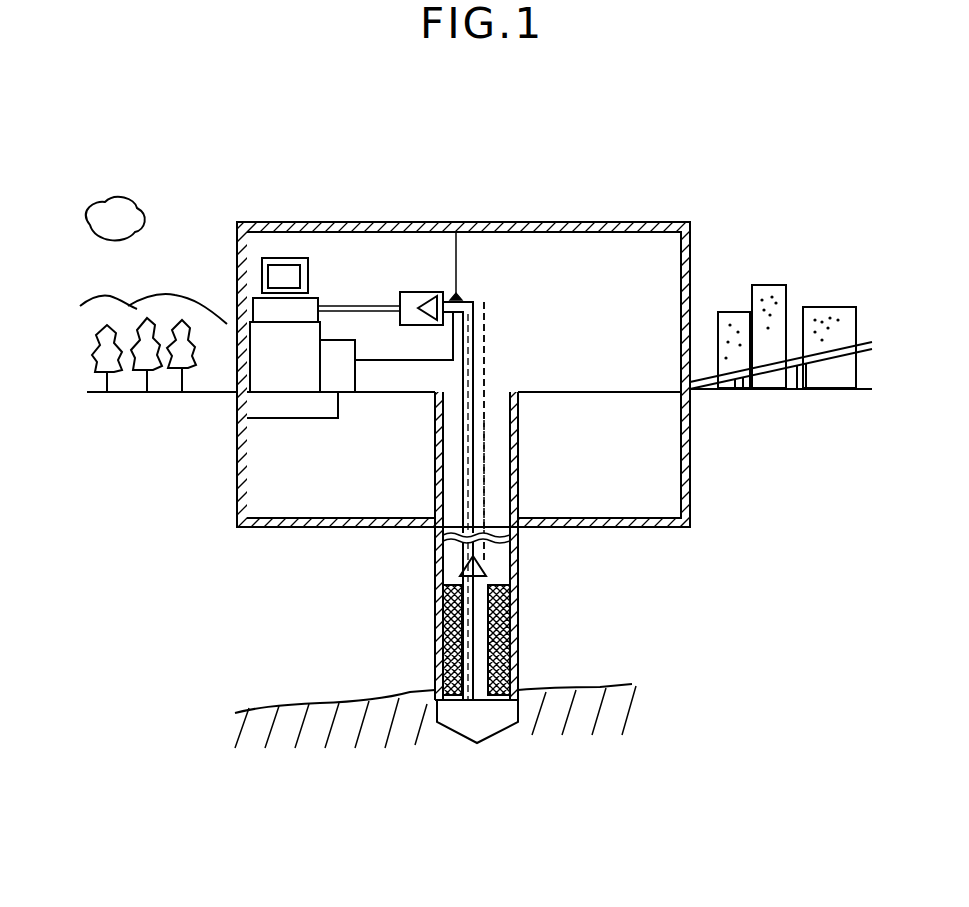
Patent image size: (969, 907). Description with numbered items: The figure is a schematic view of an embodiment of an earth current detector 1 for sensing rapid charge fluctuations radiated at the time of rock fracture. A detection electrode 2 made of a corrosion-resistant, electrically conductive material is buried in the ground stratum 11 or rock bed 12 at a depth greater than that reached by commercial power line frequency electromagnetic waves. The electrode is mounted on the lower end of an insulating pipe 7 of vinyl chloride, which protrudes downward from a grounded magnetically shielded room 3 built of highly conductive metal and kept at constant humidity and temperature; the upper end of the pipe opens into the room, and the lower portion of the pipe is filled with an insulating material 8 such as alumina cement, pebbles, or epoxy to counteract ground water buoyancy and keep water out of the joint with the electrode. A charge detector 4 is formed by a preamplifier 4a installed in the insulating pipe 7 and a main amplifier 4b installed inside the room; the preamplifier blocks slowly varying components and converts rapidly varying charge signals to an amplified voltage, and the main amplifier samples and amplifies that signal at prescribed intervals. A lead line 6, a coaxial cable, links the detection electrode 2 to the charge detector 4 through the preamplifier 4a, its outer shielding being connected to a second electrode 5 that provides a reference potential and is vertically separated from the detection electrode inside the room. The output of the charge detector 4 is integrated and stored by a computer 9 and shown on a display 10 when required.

The earth current detector 1 is at (513, 228).
The detection electrode 2 is at (487, 720).
The magnetically shielded room 3 is at (563, 222).
The charge detector 4 is at (555, 338).
The preamplifier 4a is at (482, 537).
The main amplifier 4b is at (456, 290).
The second electrode 5 is at (324, 308).
The lead line 6 is at (470, 452).
The insulating pipe 7 is at (508, 635).
The insulating material 8 is at (455, 606).
The computer 9 is at (278, 318).
The display 10 is at (282, 272).
The ground stratum 11 is at (158, 545).
The rock bed 12 is at (297, 807).